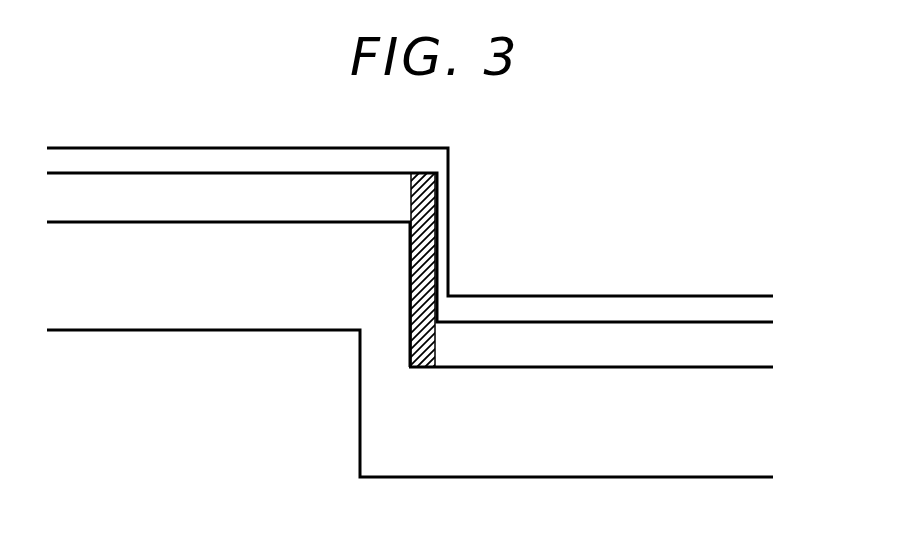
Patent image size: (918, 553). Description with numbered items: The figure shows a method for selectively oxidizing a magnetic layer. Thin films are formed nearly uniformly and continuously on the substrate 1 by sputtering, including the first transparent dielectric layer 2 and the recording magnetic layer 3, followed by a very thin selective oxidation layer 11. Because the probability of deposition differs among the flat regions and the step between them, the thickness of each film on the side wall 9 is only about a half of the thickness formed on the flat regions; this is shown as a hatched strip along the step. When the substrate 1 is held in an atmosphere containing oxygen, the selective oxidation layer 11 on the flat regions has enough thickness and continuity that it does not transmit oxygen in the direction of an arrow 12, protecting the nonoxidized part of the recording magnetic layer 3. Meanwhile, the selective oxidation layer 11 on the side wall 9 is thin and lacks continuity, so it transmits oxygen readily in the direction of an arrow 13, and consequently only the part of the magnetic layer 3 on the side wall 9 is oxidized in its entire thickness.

The substrate 1 is at (416, 423).
The first transparent dielectric layer 2 is at (419, 326).
The recording magnetic layer 3 is at (419, 267).
The side wall 9 is at (432, 222).
The selective oxidation layer 11 is at (426, 236).
The arrow 12 is at (437, 186).
The arrow 13 is at (455, 248).